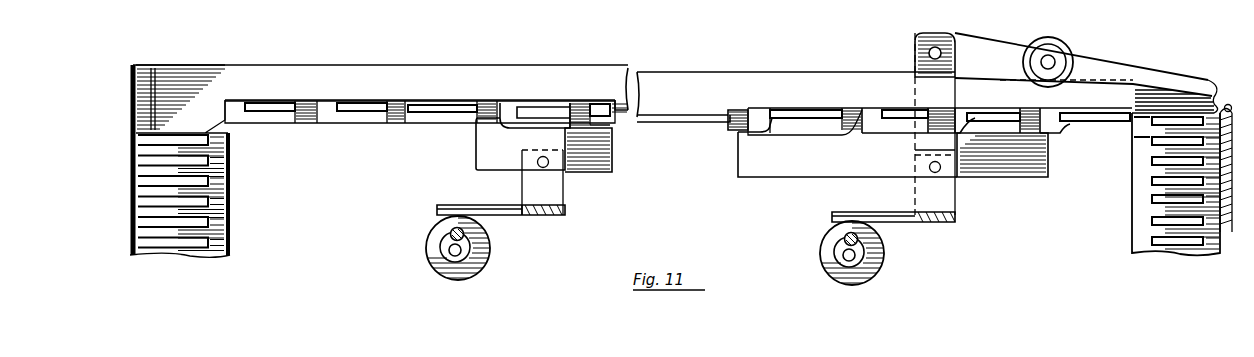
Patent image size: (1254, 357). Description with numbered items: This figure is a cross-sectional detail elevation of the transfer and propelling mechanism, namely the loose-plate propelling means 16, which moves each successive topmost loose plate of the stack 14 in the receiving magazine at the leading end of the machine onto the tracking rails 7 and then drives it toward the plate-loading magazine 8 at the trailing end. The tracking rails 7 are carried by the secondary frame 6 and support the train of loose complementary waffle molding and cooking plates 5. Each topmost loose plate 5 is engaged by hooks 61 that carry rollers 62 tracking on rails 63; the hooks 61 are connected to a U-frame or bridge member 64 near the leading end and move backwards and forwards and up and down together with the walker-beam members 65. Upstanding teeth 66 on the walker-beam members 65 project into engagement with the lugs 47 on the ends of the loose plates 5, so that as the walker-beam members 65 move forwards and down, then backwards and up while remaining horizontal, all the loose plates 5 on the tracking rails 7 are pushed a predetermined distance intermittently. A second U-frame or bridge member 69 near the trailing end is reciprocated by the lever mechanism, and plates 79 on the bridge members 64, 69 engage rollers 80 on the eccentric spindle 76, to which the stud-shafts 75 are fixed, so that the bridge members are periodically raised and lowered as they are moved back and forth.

The loose complementary waffle molding and cooking plates 5 is at (142, 182).
The secondary frame 6 is at (527, 80).
The tracking rails 7 is at (673, 120).
The plate-loading magazine 8 is at (132, 203).
The stack of loose plates 14 is at (1140, 193).
The loose-plate propelling means 16 is at (1152, 58).
The lugs 47 is at (441, 109).
The hooks 61 is at (1102, 62).
The rollers 62 is at (1067, 45).
The rails 63 is at (877, 83).
The U-frame or bridge member 64 is at (947, 192).
The walker-beam members 65 is at (482, 157).
The upstanding teeth 66 is at (485, 120).
The U-frame or bridge member 69 is at (547, 217).
The stud-shafts 75 is at (448, 230).
The eccentric spindle 76 is at (449, 250).
The plates 79 is at (437, 209).
The rollers 80 is at (491, 250).